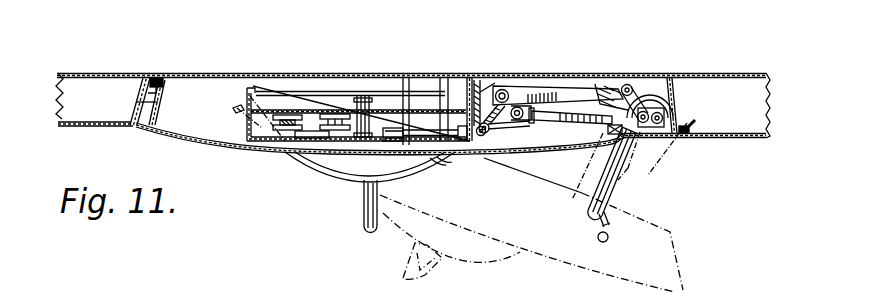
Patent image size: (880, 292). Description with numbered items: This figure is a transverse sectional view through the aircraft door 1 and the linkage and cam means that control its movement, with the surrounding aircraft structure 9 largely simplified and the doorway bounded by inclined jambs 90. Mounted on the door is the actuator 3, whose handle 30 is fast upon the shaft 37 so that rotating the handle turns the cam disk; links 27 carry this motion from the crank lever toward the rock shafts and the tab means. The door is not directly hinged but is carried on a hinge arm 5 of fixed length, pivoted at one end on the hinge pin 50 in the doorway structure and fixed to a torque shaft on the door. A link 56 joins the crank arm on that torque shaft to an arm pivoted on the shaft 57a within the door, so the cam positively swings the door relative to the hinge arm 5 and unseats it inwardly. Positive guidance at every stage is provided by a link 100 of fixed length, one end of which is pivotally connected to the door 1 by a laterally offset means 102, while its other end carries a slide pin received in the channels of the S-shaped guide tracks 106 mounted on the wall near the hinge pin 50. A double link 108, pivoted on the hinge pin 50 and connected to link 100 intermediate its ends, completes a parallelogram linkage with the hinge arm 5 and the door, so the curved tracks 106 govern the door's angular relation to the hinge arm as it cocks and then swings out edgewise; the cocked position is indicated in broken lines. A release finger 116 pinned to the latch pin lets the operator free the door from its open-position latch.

The door 1 is at (241, 153).
The actuator 3 is at (420, 180).
The hinge arm 5 is at (540, 92).
The aircraft structure 9 is at (88, 128).
The links 27 is at (280, 121).
The handle 30 is at (365, 233).
The shaft 37 is at (356, 131).
The hinge pin 50 is at (628, 84).
The link 56 is at (442, 134).
The shaft 57a is at (404, 104).
The jambs 90 is at (165, 91).
The link 100 is at (568, 118).
The pivotal connection means 102 is at (508, 135).
The guide tracks 106 is at (667, 103).
The double link 108 is at (633, 82).
The release finger 116 is at (650, 128).